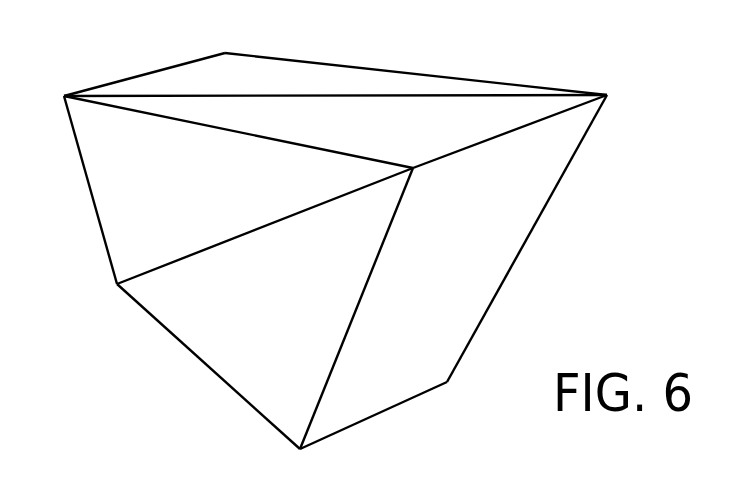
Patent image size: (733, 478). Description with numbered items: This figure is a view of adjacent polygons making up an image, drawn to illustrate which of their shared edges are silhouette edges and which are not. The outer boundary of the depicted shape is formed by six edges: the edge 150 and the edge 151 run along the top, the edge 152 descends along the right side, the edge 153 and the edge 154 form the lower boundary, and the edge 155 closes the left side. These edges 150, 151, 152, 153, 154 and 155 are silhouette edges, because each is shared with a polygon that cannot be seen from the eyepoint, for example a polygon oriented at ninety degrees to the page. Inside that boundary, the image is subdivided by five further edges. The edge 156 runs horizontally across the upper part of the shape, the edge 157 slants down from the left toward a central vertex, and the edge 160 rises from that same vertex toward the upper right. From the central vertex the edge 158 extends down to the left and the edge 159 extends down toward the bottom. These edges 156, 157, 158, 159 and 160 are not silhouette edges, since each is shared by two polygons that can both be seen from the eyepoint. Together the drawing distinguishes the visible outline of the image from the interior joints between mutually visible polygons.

The edge 150 is at (143, 75).
The edge 151 is at (378, 67).
The edge 152 is at (565, 167).
The edge 153 is at (398, 403).
The edge 154 is at (163, 328).
The edge 155 is at (85, 181).
The edge 156 is at (410, 98).
The edge 157 is at (250, 137).
The edge 158 is at (292, 218).
The edge 159 is at (372, 279).
The edge 160 is at (479, 144).